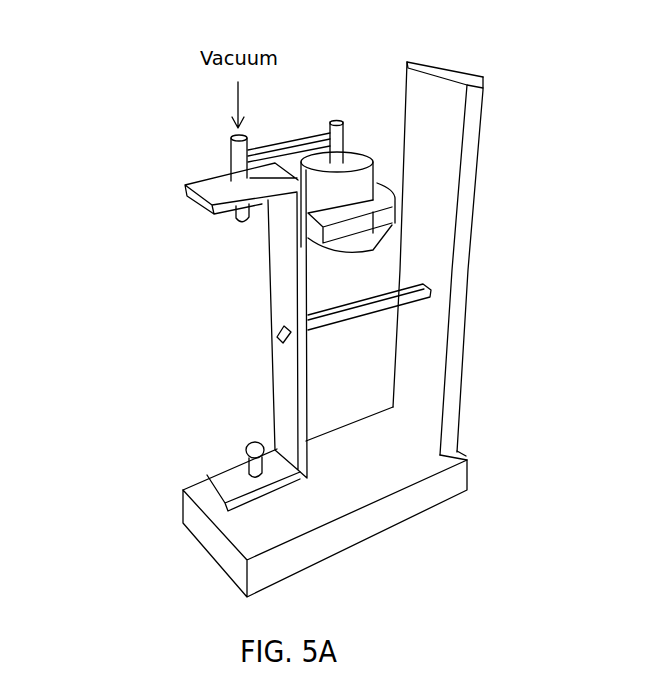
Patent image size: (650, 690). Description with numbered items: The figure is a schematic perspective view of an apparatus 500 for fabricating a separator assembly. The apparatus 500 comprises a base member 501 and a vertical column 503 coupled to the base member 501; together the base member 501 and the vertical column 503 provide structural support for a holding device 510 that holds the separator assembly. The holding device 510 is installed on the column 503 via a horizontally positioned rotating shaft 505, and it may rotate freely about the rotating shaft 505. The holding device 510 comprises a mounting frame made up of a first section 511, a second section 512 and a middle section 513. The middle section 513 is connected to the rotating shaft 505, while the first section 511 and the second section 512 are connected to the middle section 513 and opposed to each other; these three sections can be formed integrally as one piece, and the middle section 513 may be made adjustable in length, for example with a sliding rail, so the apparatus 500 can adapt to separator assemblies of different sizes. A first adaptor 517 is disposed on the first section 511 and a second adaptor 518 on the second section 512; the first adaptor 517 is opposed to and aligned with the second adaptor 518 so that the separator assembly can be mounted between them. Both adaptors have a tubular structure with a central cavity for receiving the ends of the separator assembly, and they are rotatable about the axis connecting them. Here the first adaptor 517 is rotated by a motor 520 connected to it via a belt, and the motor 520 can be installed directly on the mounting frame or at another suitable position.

The apparatus 500 is at (462, 25).
The base member 501 is at (410, 505).
The vertical column 503 is at (468, 153).
The rotating shaft 505 is at (402, 295).
The holding device 510 is at (110, 143).
The first section 511 is at (213, 183).
The second section 512 is at (232, 483).
The middle section 513 is at (285, 295).
The first adaptor 517 is at (235, 223).
The second adaptor 518 is at (245, 452).
The motor 520 is at (355, 153).